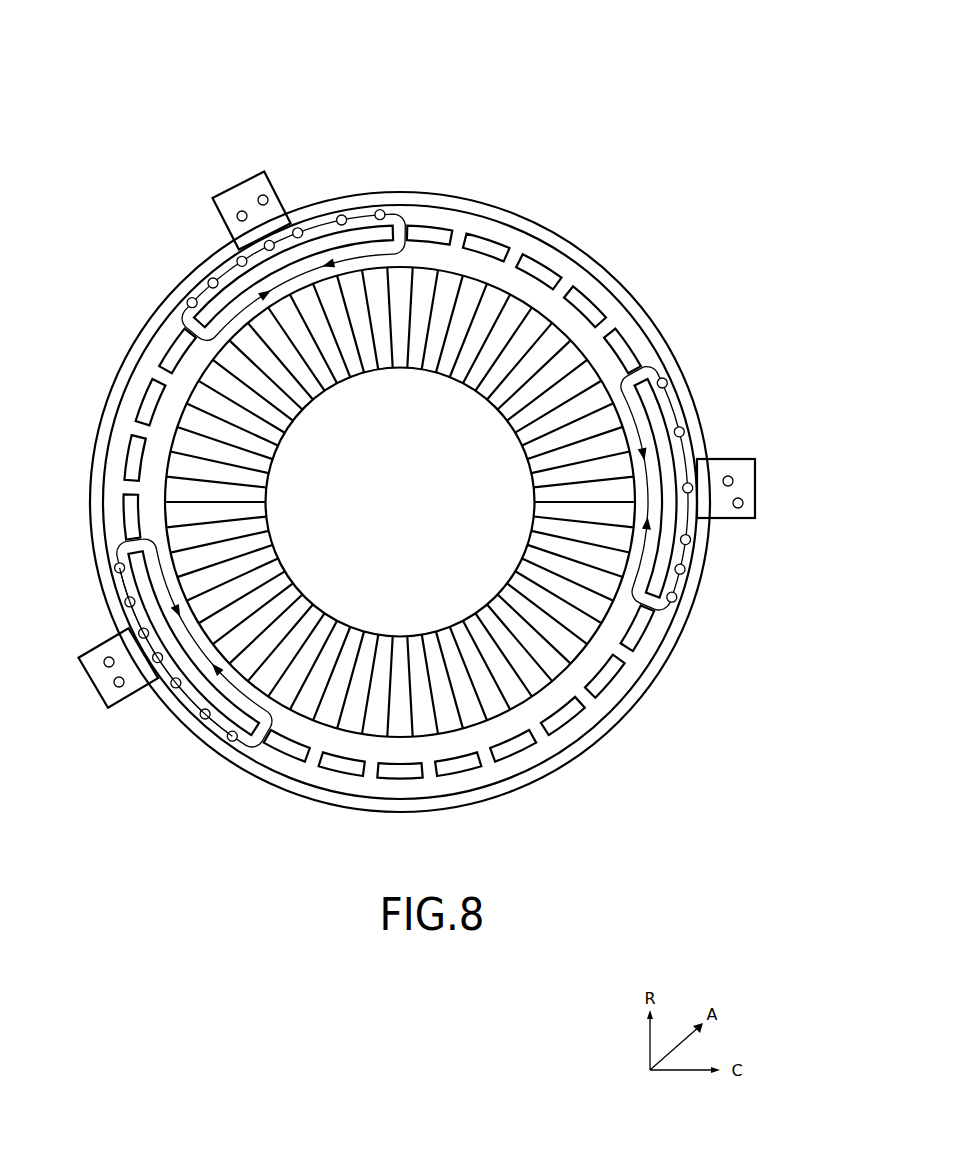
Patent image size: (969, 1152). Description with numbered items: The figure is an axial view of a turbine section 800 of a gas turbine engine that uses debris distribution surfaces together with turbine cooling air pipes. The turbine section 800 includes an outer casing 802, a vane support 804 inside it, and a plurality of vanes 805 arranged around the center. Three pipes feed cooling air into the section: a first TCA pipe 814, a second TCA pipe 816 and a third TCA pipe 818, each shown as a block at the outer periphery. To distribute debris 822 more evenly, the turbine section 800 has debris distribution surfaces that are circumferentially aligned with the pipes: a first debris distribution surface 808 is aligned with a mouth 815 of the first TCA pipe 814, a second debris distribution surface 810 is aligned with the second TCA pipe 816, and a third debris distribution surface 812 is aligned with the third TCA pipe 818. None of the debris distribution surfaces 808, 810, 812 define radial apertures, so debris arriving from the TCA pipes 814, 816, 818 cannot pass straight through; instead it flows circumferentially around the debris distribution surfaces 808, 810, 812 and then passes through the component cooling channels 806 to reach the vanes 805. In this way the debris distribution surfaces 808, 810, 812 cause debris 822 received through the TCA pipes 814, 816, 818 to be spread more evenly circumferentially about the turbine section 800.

The turbine section 800 is at (150, 30).
The casing 802 is at (105, 407).
The vane support 804 is at (127, 457).
The vanes 805 is at (358, 638).
The component cooling channels 806 is at (128, 488).
The first debris distribution surface 808 is at (195, 688).
The second debris distribution surface 810 is at (330, 236).
The third debris distribution surface 812 is at (672, 552).
The first TCA pipe 814 is at (98, 673).
The mouth 815 is at (147, 648).
The second TCA pipe 816 is at (237, 192).
The third TCA pipe 818 is at (747, 494).
The debris 822 is at (118, 688).